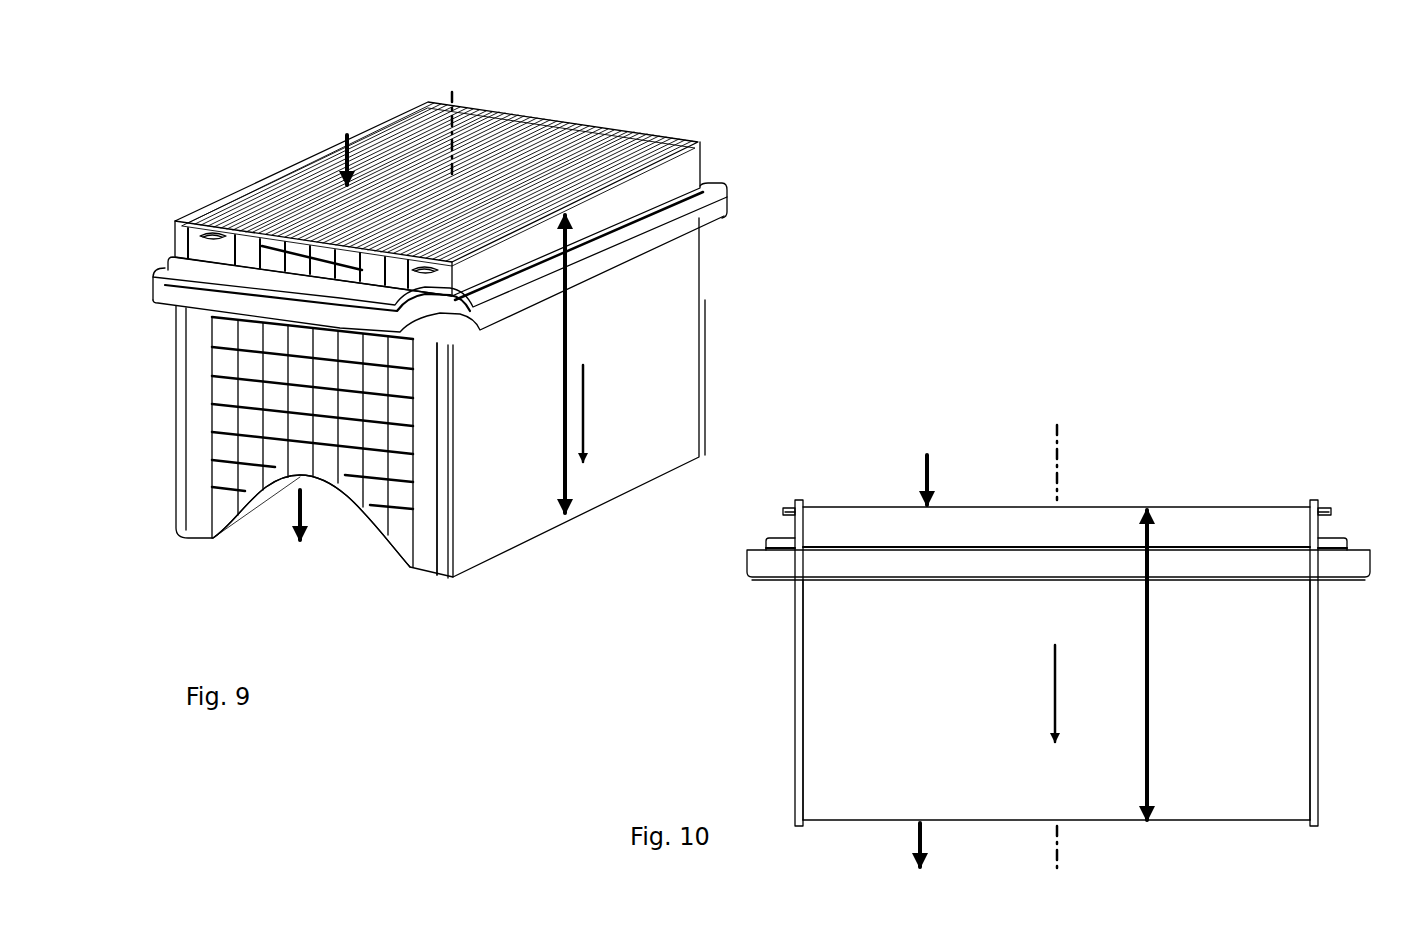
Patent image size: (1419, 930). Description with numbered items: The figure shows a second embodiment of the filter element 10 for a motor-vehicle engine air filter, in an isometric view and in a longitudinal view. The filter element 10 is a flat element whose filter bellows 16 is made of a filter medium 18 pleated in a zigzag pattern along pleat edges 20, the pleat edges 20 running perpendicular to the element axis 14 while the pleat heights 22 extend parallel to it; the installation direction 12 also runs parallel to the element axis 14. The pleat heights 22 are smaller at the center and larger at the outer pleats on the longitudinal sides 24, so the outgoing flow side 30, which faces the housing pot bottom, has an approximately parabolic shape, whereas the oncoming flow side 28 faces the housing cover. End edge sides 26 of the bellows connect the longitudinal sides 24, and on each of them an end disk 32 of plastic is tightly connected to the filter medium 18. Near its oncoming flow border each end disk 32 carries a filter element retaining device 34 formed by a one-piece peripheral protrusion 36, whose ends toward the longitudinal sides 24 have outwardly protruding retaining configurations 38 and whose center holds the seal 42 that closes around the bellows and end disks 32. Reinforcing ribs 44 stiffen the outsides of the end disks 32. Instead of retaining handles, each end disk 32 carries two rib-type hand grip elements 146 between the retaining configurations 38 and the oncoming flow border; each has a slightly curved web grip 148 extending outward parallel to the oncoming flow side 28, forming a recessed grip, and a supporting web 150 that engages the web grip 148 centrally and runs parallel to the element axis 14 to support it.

In FIG. 9, the filter element 10 is at (185, 136).
In FIG. 10, the filter element 10 is at (1220, 432).
In FIG. 9, the installation direction 12 is at (583, 405).
In FIG. 10, the installation direction 12 is at (1060, 658).
In FIG. 9, the element axis 14 is at (455, 115).
In FIG. 10, the element axis 14 is at (1055, 430).
In FIG. 9, the filter bellows 16 is at (663, 331).
In FIG. 10, the filter bellows 16 is at (1238, 806).
In FIG. 9, the filter medium 18 is at (673, 387).
In FIG. 10, the filter medium 18 is at (1292, 788).
In FIG. 9, the pleat edges 20 is at (337, 153).
In FIG. 10, the pleat edges 20 is at (1130, 507).
In FIG. 9, the pleat heights 22 is at (567, 490).
In FIG. 10, the pleat heights 22 is at (1150, 752).
In FIG. 9, the longitudinal sides 24 is at (690, 290).
In FIG. 10, the longitudinal sides 24 is at (1290, 745).
In FIG. 9, the end edge sides 26 is at (425, 575).
In FIG. 10, the end edge sides 26 is at (795, 760).
In FIG. 9, the oncoming flow side 28 is at (405, 160).
In FIG. 10, the oncoming flow side 28 is at (995, 505).
In FIG. 9, the outgoing flow side 30 is at (344, 505).
In FIG. 10, the outgoing flow side 30 is at (980, 826).
In FIG. 9, the end disk 32 is at (203, 526).
In FIG. 10, the end disk 32 is at (804, 810).
In FIG. 9, the filter element retaining device 34 is at (171, 267).
In FIG. 10, the filter element retaining device 34 is at (766, 538).
In FIG. 9, the protrusion 36 is at (237, 372).
In FIG. 10, the protrusion 36 is at (790, 552).
In FIG. 9, the retaining configuration 38 is at (190, 292).
In FIG. 10, the retaining configuration 38 is at (778, 552).
In FIG. 9, the seal 42 is at (730, 210).
In FIG. 10, the seal 42 is at (918, 568).
In FIG. 9, the reinforcing ribs 44 is at (405, 520).
In FIG. 10, the reinforcing ribs 44 is at (792, 727).
In FIG. 9, the hand grip elements 146 is at (205, 231).
In FIG. 10, the hand grip elements 146 is at (789, 508).
In FIG. 9, the web grip 148 is at (218, 237).
In FIG. 10, the web grip 148 is at (795, 513).
In FIG. 9, the supporting web 150 is at (206, 233).
In FIG. 10, the supporting web 150 is at (795, 512).